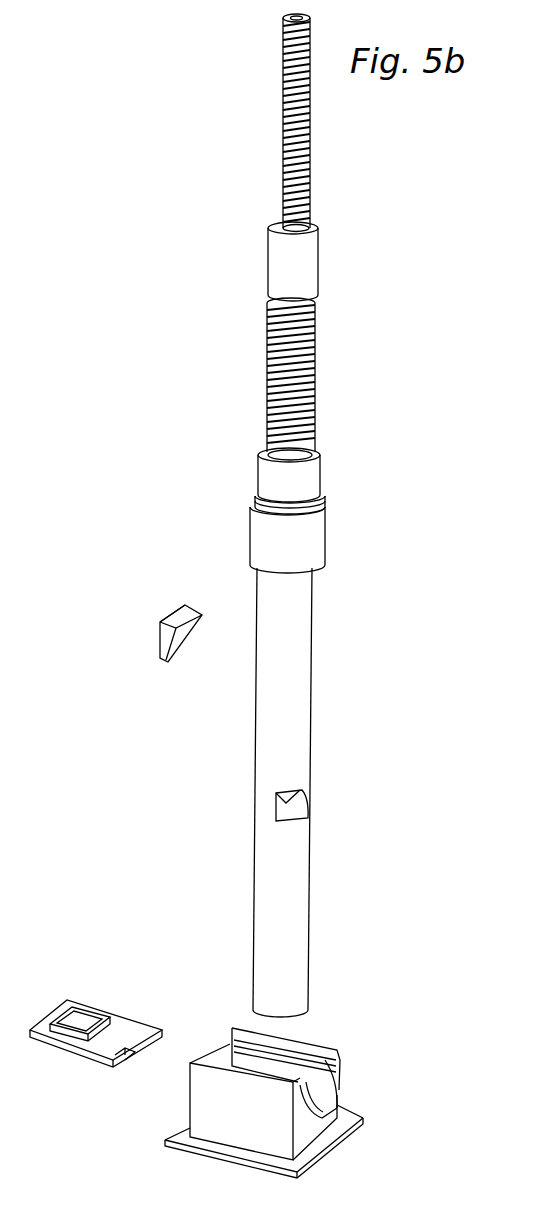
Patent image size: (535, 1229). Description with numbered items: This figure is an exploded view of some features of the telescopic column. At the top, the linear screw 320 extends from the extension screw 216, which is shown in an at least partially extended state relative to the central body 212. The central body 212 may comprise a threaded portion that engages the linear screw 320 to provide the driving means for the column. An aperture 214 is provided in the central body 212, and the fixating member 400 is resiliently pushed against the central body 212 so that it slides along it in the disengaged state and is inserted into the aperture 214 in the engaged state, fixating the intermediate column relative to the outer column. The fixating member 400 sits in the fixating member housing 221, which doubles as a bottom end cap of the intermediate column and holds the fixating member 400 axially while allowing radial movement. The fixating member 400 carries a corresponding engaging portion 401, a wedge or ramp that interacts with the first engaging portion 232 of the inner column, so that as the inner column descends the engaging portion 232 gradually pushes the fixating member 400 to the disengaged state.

The linear screw 320 is at (283, 130).
The extension screw 216 is at (268, 262).
The central body 212 is at (257, 716).
The aperture 214 is at (320, 794).
The first engaging portion 232 is at (160, 621).
The fixating member housing 221 is at (335, 1090).
The fixating member 400 is at (130, 1020).
The corresponding engaging portion 401 is at (50, 1012).